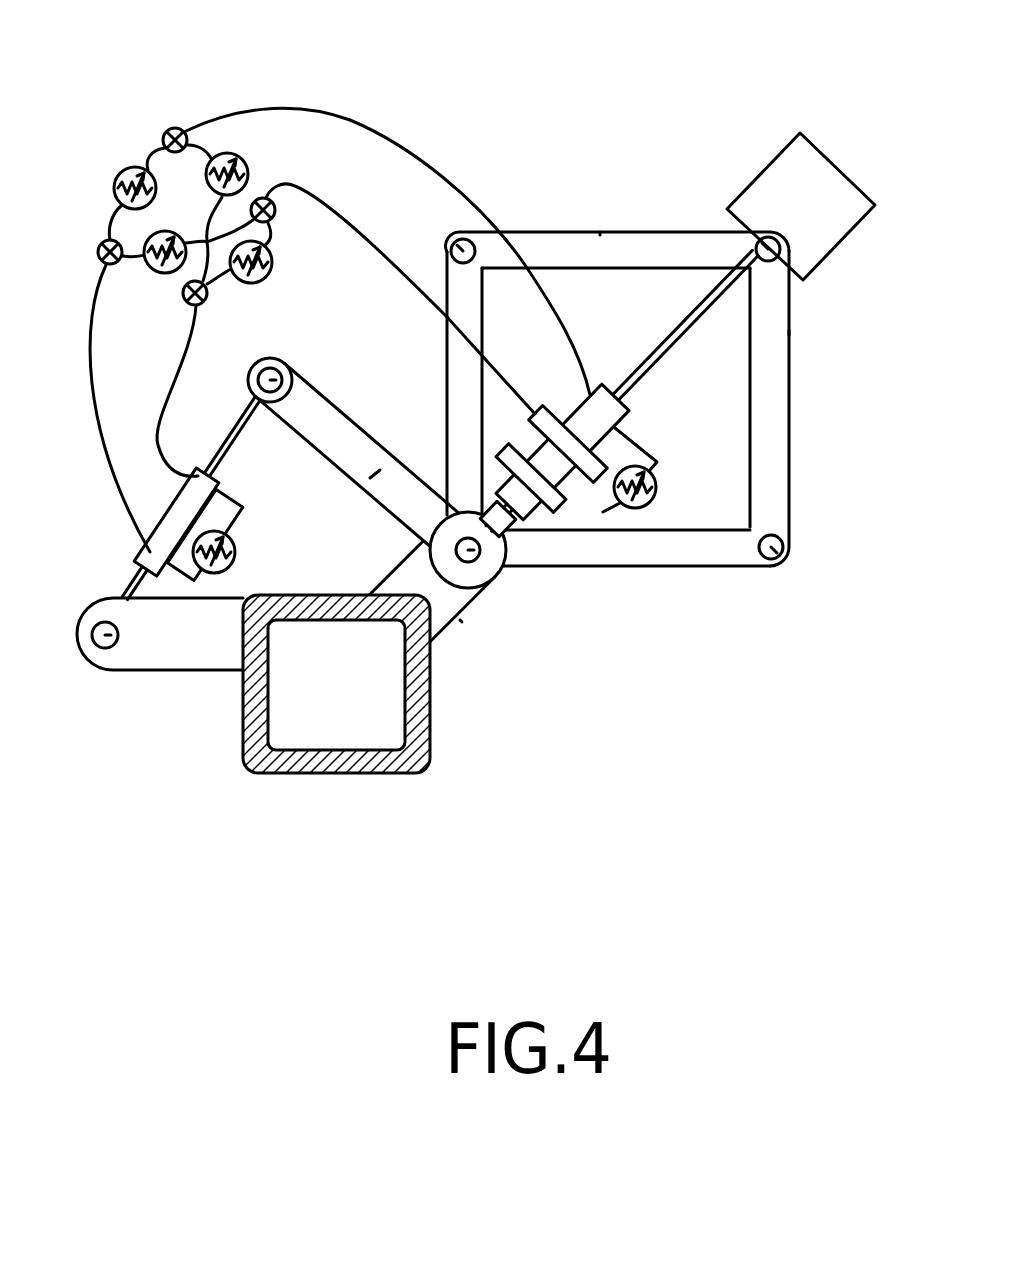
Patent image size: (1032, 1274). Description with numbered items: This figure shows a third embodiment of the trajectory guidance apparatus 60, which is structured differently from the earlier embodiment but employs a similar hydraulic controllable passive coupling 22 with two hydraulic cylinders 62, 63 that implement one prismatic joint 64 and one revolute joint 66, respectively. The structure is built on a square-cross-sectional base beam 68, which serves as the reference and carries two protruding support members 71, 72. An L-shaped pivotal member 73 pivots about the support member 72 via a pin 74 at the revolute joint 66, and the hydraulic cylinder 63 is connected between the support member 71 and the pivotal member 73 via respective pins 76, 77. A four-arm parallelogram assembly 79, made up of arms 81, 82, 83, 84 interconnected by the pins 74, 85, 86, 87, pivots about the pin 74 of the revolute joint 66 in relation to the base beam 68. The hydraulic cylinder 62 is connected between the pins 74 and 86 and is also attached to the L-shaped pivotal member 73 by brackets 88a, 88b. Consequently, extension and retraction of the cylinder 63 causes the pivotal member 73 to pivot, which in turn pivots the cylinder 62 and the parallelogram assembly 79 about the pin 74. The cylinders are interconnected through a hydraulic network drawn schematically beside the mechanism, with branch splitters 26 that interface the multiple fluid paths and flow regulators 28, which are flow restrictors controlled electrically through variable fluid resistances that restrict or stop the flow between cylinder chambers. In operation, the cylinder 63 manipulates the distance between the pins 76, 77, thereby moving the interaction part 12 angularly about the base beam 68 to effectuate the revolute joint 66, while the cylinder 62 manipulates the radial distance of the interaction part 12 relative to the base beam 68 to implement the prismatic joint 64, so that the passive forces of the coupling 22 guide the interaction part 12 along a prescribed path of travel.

The interaction part 12 is at (801, 206).
The controllable passive coupling 22 is at (315, 284).
The branch splitter 26 is at (173, 128).
The flow regulator 28 is at (115, 195).
The trajectory guidance apparatus 60 is at (637, 334).
The hydraulic cylinder 62 is at (619, 393).
The hydraulic cylinder 63 is at (167, 517).
The prismatic joint 64 is at (806, 332).
The revolute joint 66 is at (492, 627).
The base beam 68 is at (335, 778).
The support member 71 is at (178, 648).
The support member 72 is at (437, 590).
The L-shaped pivotal member 73 is at (365, 515).
The pin 74 is at (478, 548).
The pin 76 is at (78, 643).
The pin 77 is at (284, 379).
The four-arm parallelogram assembly 79 is at (597, 203).
The arm 81 is at (463, 413).
The arm 82 is at (648, 550).
The arm 83 is at (773, 418).
The arm 84 is at (668, 245).
The pin 85 is at (785, 555).
The pin 86 is at (790, 265).
The pin 87 is at (454, 238).
The bracket 88a is at (508, 463).
The bracket 88b is at (555, 427).